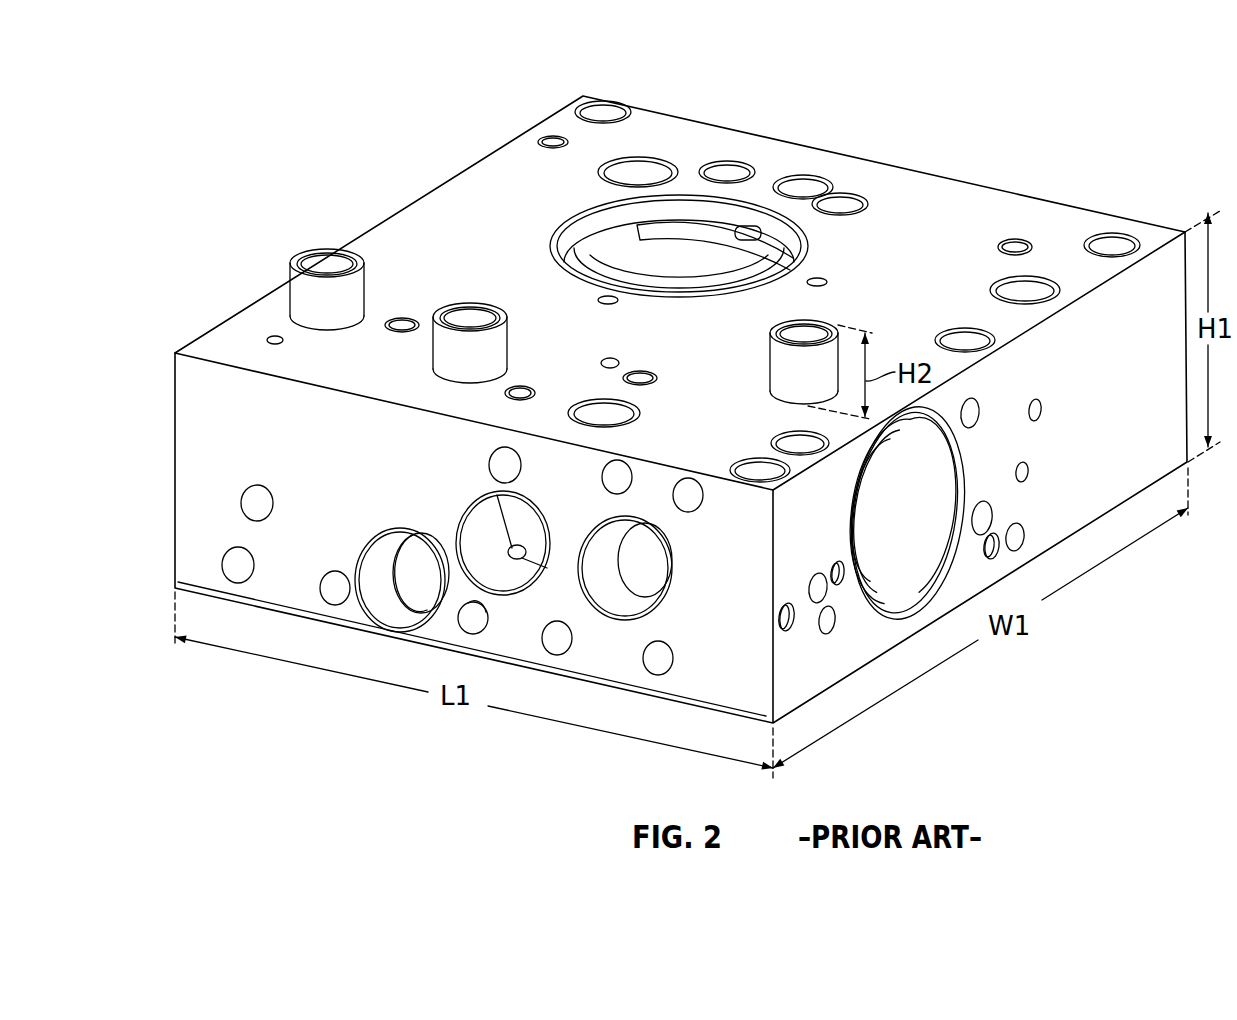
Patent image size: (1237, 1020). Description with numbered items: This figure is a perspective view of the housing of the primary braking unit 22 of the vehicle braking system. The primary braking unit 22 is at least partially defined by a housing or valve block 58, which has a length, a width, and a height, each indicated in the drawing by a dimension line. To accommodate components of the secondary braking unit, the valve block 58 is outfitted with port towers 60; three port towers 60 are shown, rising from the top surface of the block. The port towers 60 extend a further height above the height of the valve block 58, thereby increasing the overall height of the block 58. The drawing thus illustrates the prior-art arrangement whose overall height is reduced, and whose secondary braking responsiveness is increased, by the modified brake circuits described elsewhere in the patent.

The primary braking unit 22 is at (681, 371).
The valve block 58 is at (915, 168).
The port towers 60 is at (302, 284).